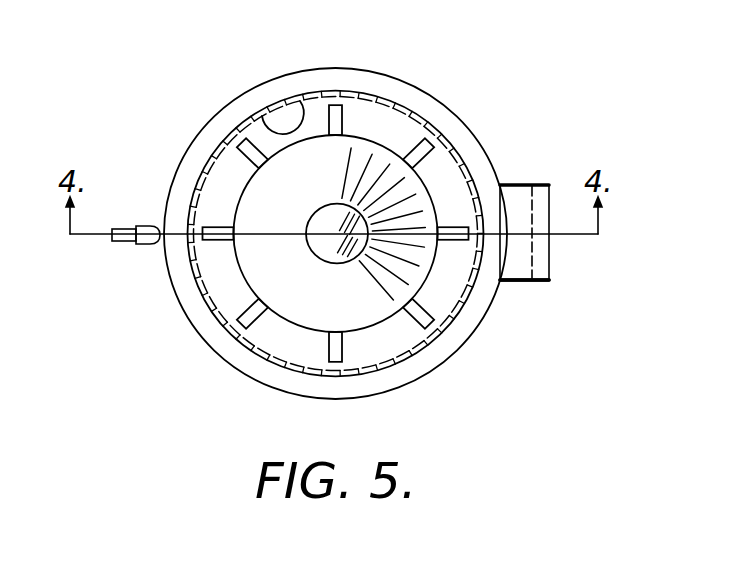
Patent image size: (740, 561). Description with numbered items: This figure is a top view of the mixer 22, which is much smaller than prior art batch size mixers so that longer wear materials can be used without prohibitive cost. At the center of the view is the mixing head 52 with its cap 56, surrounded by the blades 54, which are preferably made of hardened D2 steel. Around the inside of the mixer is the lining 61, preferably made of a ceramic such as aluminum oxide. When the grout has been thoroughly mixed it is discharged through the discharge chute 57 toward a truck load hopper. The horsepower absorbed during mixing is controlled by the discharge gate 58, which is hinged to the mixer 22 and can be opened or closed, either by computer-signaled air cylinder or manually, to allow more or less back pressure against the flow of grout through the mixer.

The mixer 22 is at (223, 357).
The mixing head 52 is at (430, 193).
The blades 54 is at (407, 163).
The cap 56 is at (360, 308).
The discharge chute 57 is at (522, 283).
The discharge gate 58 is at (527, 252).
The lining 61 is at (265, 128).